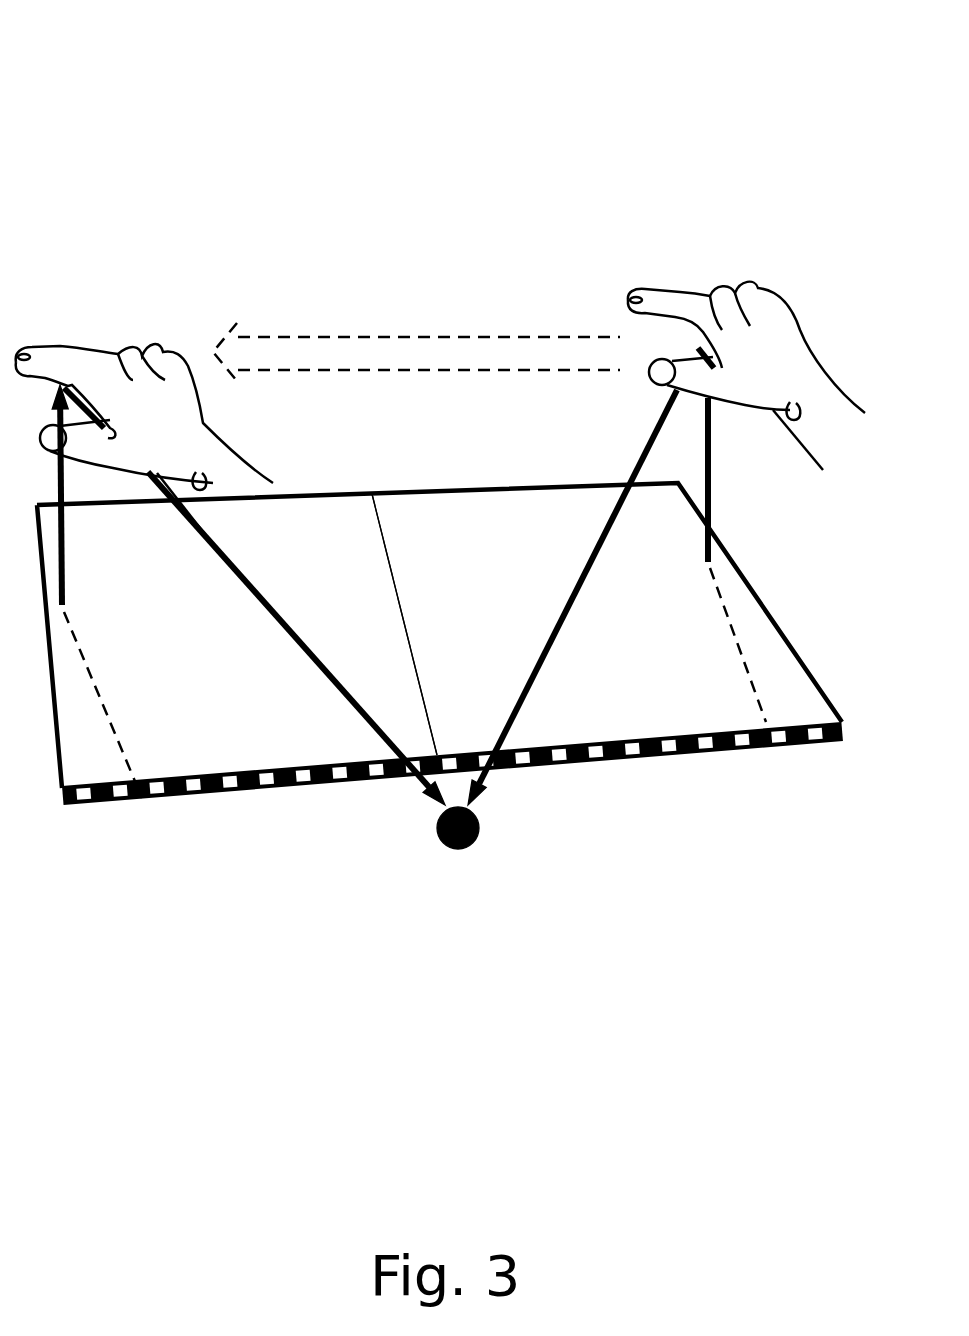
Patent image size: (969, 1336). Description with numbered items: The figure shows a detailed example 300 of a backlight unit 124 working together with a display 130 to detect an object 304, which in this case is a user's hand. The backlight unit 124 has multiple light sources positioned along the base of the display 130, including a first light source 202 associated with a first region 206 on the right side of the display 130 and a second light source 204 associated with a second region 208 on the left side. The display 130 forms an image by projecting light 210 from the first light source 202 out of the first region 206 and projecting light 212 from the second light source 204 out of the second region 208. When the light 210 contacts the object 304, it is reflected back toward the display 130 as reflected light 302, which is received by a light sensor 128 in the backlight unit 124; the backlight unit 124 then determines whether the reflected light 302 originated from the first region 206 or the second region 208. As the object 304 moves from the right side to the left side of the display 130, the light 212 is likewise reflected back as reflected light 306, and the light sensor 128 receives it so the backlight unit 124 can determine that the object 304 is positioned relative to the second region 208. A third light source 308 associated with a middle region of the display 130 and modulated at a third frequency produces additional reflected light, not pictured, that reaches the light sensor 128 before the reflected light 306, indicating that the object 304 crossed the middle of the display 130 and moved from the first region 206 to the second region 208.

The detailed example 300 is at (136, 49).
The object 304 is at (47, 353).
The display 130 is at (412, 434).
The backlight unit 124 is at (231, 839).
The light sensor 128 is at (457, 848).
The first light source 202 is at (767, 743).
The second light source 204 is at (143, 800).
The first region 206 is at (674, 614).
The second region 208 is at (217, 647).
The light 210 is at (712, 481).
The light 212 is at (67, 538).
The reflected light 302 is at (584, 580).
The reflected light 306 is at (292, 640).
The third light source 308 is at (440, 757).